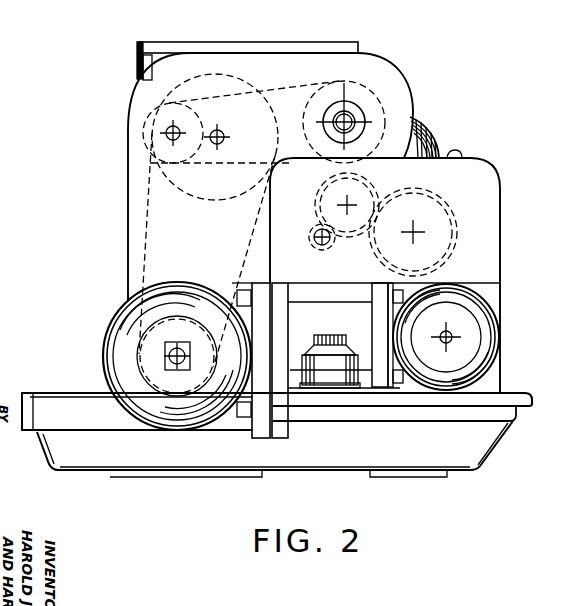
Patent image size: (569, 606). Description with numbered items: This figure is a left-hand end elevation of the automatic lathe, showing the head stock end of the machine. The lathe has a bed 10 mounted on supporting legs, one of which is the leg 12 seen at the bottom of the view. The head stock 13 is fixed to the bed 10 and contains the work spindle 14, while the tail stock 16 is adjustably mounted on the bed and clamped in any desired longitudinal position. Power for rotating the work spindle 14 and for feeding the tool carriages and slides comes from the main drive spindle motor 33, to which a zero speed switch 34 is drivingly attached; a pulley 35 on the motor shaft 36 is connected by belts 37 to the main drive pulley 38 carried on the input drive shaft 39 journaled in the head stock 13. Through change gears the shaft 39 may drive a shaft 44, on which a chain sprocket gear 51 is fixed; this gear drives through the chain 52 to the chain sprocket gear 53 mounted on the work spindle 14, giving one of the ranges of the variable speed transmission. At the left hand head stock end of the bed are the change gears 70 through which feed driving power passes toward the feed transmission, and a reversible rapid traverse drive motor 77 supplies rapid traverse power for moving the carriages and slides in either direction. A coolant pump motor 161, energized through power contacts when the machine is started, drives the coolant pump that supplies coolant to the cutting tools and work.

The bed 10 is at (366, 360).
The supporting leg 12 is at (372, 478).
The head stock 13 is at (282, 62).
The work spindle 14 is at (350, 128).
The tail stock 16 is at (412, 148).
The main drive spindle motor 33 is at (118, 345).
The zero speed switch 34 is at (168, 370).
The pulley 35 is at (166, 320).
The motor shaft 36 is at (184, 358).
The belts 37 is at (148, 225).
The main drive pulley 38 is at (236, 76).
The input drive shaft 39 is at (225, 142).
The shaft 44 is at (182, 128).
The chain sprocket gear 51 is at (145, 130).
The chain 52 is at (295, 86).
The chain sprocket gear 53 is at (383, 102).
The change gears 70 is at (354, 256).
The rapid traverse drive motor 77 is at (490, 352).
The coolant pump motor 161 is at (330, 361).